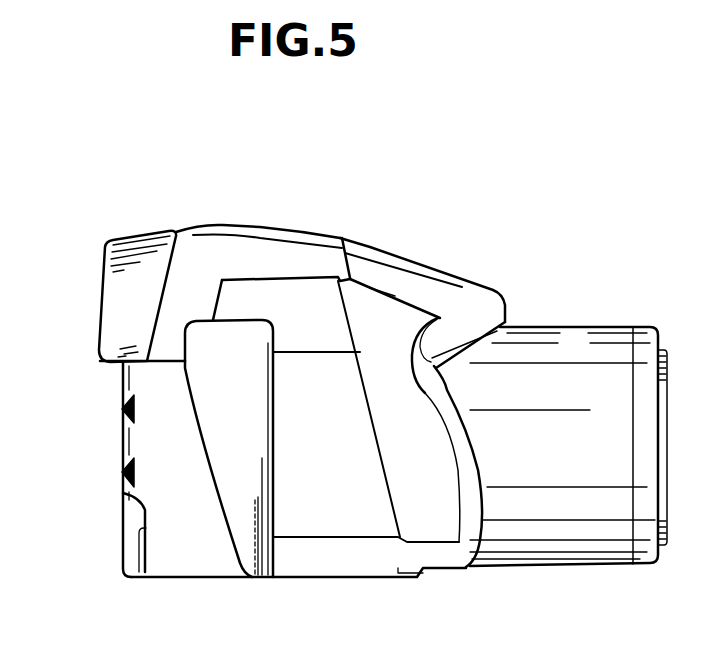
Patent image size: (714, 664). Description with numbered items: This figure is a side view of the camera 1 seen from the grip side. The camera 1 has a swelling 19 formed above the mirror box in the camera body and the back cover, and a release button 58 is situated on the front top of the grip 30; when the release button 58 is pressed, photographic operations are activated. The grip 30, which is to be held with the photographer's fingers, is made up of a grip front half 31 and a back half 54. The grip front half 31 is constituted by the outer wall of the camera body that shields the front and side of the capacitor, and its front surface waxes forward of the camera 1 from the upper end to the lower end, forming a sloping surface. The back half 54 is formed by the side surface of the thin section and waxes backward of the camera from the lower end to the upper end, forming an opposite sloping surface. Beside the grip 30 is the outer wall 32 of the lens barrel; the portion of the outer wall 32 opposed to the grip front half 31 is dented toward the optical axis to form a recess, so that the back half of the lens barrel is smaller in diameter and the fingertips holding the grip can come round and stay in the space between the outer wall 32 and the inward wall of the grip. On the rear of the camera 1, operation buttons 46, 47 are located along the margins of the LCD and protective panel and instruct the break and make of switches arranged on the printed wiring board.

The camera 1 is at (520, 245).
The swelling 19 is at (253, 222).
The release button 58 is at (407, 283).
The outer wall of the lens barrel 32 is at (575, 327).
The operation button 46 is at (123, 406).
The operation button 47 is at (123, 472).
The back half of the grip 54 is at (213, 483).
The grip 30 is at (358, 585).
The grip front half 31 is at (477, 472).